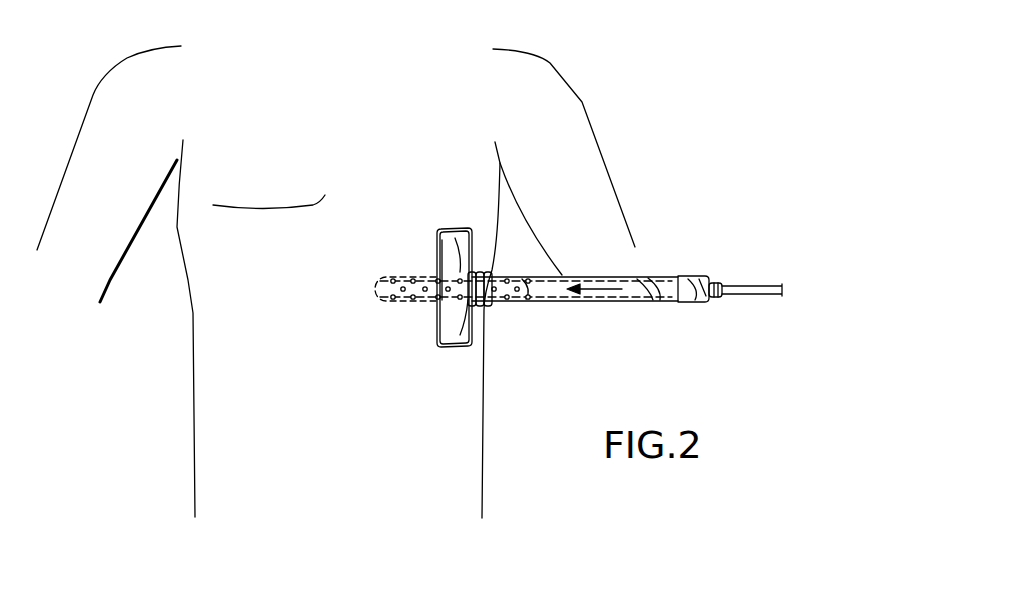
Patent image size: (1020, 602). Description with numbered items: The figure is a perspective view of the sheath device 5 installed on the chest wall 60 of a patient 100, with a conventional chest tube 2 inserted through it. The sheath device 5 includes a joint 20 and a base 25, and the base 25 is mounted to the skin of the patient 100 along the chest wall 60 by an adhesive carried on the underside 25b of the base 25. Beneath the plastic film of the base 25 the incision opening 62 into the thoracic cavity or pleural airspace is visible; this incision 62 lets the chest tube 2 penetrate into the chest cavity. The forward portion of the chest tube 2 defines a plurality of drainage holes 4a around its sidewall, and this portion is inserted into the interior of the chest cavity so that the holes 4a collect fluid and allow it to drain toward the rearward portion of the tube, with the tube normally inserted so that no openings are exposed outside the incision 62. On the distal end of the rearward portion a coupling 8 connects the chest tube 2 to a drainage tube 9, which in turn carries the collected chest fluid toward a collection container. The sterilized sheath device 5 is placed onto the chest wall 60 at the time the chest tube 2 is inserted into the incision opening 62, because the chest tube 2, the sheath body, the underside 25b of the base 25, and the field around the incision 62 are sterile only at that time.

The patient 100 is at (590, 47).
The sheath device 5 is at (663, 267).
The drainage holes 4a is at (412, 275).
The joint 20 is at (495, 307).
The base 25 is at (447, 330).
The underside of the base 25b is at (432, 245).
The incision opening 62 is at (434, 308).
The chest tube 2 is at (693, 305).
The coupling 8 is at (721, 287).
The drainage tube 9 is at (752, 298).
The chest wall 60 is at (457, 411).